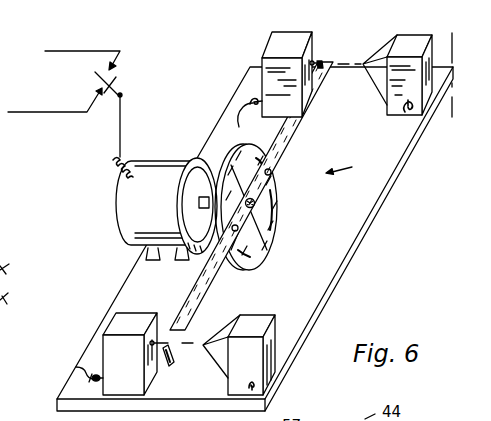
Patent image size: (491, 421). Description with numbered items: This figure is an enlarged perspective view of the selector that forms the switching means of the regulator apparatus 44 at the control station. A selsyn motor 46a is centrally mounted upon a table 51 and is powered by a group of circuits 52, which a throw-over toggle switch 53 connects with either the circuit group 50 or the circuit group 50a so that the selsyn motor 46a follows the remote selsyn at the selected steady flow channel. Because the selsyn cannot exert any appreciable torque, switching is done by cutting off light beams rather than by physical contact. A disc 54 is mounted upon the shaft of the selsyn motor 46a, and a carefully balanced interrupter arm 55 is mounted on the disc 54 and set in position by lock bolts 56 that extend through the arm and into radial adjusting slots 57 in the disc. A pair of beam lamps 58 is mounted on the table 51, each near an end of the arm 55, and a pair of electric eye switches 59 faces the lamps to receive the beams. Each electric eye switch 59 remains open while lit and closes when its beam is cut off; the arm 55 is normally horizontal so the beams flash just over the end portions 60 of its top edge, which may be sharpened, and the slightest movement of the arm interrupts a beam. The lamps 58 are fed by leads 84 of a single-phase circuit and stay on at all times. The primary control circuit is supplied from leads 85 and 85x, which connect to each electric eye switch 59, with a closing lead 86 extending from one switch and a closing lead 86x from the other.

The regulator apparatus 44 is at (350, 168).
The selsyn motor 46a is at (166, 209).
The circuit group 50 is at (90, 46).
The circuit group 50a is at (60, 108).
The table 51 is at (396, 149).
The group of circuits 52 is at (126, 156).
The throw-over toggle switch 53 is at (119, 85).
The disc 54 is at (256, 231).
The interrupter arm 55 is at (300, 118).
The lock bolts 56 is at (273, 172).
The radial adjusting slots 57 is at (257, 203).
The beam lamps 58 is at (317, 215).
The electric eye switches 59 is at (207, 213).
The end portions of top edge of arm 60 is at (331, 60).
The leads 84 is at (403, 116).
The lead 85 is at (235, 120).
The closing lead 86 is at (257, 110).
The lead 85x is at (71, 369).
The closing lead 86x is at (100, 379).